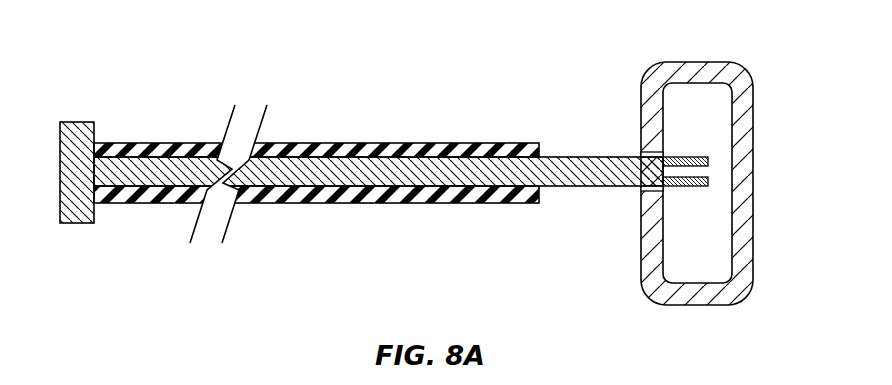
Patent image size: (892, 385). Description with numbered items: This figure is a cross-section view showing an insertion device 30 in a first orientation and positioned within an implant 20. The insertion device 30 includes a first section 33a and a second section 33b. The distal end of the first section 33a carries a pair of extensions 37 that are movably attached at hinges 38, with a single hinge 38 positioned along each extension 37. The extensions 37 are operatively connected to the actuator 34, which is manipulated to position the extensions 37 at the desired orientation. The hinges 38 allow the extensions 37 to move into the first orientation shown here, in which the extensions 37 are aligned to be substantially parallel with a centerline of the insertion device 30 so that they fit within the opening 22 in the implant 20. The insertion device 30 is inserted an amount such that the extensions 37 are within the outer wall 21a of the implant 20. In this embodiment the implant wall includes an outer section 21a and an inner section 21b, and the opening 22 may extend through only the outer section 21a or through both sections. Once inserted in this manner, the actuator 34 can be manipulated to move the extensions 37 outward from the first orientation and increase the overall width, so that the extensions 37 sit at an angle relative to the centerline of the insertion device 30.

The implant 20 is at (760, 63).
The outer section of wall 21a is at (648, 260).
The inner section of wall 21b is at (745, 142).
The opening 22 is at (632, 190).
The insertion device 30 is at (291, 78).
The first section 33a is at (418, 150).
The second section 33b is at (496, 172).
The actuator 34 is at (60, 147).
The extensions 37 is at (708, 183).
The hinges 38 is at (660, 155).